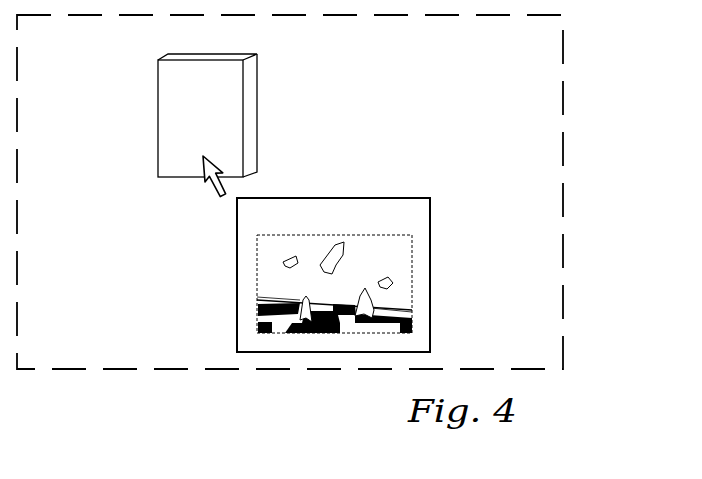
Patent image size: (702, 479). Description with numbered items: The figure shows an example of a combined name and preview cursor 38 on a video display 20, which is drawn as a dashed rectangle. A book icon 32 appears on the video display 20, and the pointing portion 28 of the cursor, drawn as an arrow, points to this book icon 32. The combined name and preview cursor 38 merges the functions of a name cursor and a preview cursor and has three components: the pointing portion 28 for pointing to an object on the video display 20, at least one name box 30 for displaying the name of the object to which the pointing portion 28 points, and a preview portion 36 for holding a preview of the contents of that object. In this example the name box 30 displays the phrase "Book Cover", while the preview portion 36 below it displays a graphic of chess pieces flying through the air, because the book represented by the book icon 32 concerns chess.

The video display 20 is at (563, 80).
The pointing portion 28 is at (213, 186).
The name box 30 is at (422, 210).
The book icon 32 is at (176, 98).
The preview portion 36 is at (422, 288).
The combined name and preview cursor 38 is at (307, 304).